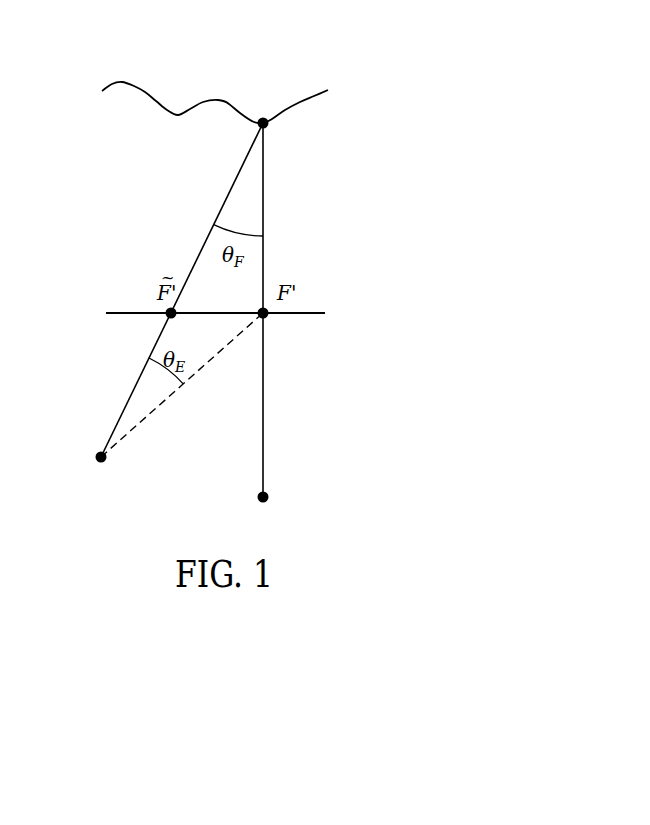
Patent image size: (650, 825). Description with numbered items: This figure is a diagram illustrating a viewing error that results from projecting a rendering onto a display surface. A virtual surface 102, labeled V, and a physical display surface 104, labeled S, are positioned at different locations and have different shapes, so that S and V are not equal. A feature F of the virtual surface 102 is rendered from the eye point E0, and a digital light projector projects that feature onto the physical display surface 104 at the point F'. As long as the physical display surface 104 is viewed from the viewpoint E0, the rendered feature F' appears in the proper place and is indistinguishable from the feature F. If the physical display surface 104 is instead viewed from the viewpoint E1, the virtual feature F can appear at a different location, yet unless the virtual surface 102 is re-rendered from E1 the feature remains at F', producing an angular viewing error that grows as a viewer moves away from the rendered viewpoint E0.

The virtual surface 102 is at (304, 74).
The physical display surface 104 is at (307, 287).
The feature F is at (262, 95).
The viewpoint E1 is at (89, 472).
The eye point E0 is at (276, 512).
The virtual surface V is at (420, 91).
The physical display surface S is at (420, 311).